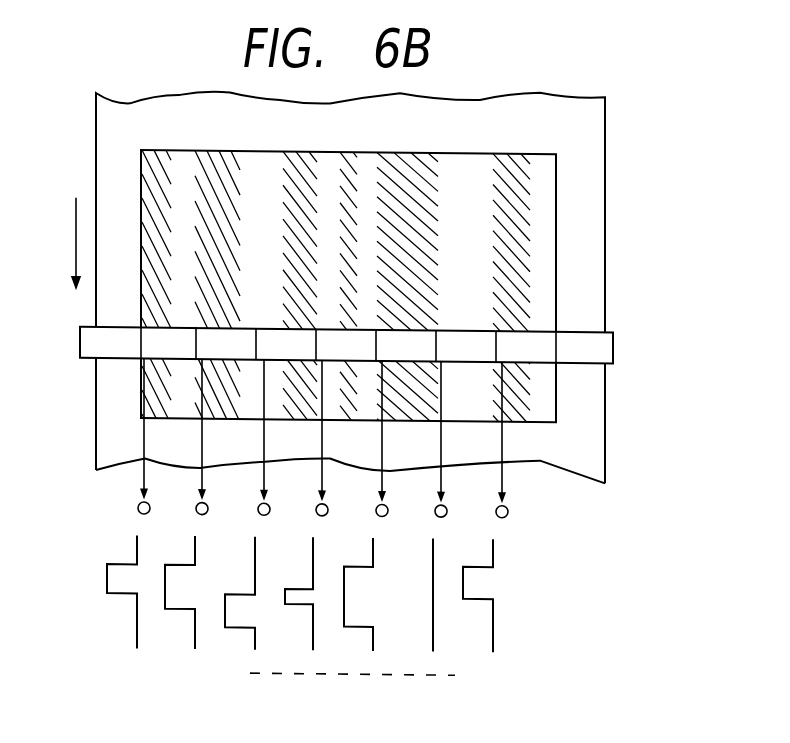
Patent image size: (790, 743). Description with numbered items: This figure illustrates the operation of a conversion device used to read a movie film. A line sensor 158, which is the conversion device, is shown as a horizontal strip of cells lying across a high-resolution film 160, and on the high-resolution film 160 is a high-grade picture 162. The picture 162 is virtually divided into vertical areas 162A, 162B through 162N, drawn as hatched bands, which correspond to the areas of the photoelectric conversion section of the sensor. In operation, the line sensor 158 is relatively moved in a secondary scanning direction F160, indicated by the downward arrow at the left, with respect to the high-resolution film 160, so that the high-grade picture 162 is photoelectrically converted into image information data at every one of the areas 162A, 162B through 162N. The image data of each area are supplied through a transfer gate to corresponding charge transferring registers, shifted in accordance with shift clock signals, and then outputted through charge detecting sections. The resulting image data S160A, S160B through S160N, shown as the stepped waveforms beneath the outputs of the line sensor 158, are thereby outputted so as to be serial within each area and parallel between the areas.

The high-resolution film 160 is at (598, 162).
The high-grade picture 162 is at (545, 232).
The first area of the picture 162A is at (197, 144).
The second area of the picture 162B is at (273, 144).
The Nth area of the picture 162N is at (547, 145).
The line sensor 158 is at (607, 342).
The secondary scanning direction F160 is at (63, 259).
The image data of first area S160A is at (134, 611).
The image data of second area S160B is at (201, 612).
The image data of Nth area S160N is at (496, 615).